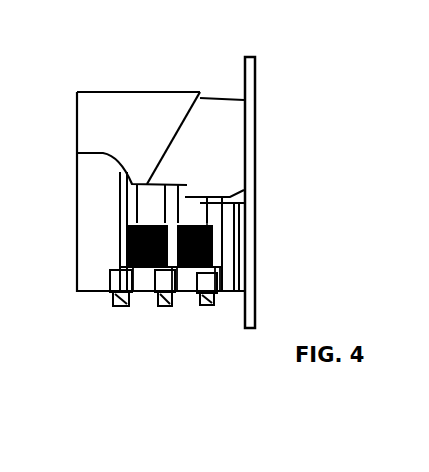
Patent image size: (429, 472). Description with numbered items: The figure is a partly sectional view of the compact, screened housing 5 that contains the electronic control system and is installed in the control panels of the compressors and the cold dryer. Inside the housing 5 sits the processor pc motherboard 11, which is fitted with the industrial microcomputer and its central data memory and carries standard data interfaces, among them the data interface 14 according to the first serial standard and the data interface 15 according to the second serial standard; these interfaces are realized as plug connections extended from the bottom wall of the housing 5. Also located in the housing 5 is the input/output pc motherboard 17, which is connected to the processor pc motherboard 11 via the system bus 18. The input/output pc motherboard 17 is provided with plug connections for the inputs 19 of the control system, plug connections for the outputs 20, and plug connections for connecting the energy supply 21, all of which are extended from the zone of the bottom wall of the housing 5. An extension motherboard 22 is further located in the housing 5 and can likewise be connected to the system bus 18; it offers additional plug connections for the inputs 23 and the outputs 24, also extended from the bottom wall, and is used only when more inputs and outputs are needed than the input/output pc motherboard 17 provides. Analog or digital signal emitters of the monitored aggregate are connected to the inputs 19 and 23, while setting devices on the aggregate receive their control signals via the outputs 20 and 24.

The housing 5 is at (116, 84).
The processor pc motherboard 11 is at (257, 170).
The data interface 14 is at (212, 306).
The data interface 15 is at (217, 380).
The input/output pc motherboard 17 is at (185, 197).
The system bus 18 is at (225, 298).
The inputs 19 is at (173, 308).
The outputs 20 is at (172, 380).
The energy supply 21 is at (172, 420).
The extension motherboard 22 is at (257, 100).
The inputs 23 is at (94, 380).
The outputs 24 is at (94, 420).